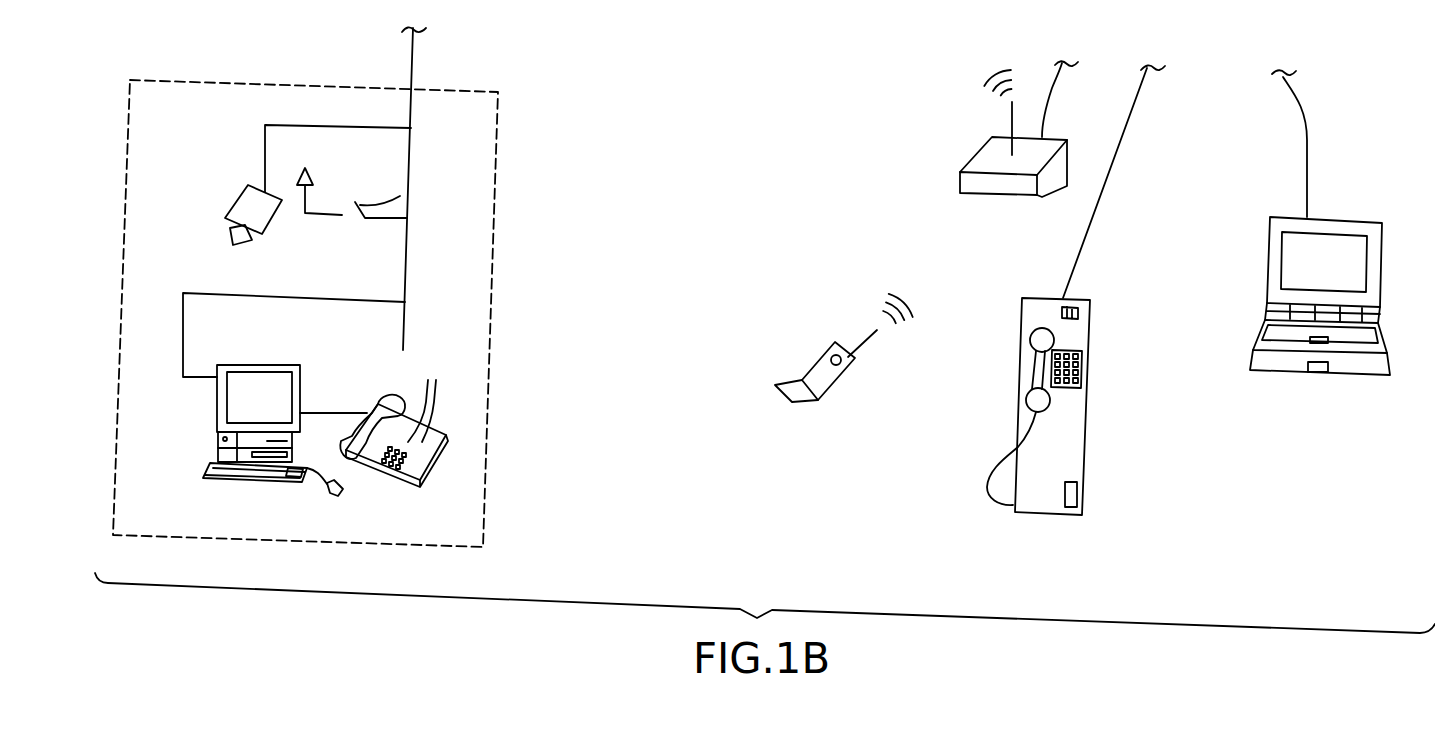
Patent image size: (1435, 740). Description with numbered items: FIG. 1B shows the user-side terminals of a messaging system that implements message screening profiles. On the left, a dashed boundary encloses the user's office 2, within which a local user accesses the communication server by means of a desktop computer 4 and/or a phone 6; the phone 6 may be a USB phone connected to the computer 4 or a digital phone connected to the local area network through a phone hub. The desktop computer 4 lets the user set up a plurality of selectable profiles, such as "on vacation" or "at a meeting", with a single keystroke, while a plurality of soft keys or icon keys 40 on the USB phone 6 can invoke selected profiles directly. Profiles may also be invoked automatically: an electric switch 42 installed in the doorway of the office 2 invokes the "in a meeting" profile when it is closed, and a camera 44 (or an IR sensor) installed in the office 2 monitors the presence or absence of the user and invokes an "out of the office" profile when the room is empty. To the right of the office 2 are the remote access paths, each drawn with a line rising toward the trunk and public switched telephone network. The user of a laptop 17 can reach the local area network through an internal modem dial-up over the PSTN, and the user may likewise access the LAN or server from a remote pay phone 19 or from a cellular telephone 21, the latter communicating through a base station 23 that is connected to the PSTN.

The office 2 is at (493, 415).
The desktop computer 4 is at (268, 365).
The phone 6 is at (413, 467).
The soft keys or icon keys 40 is at (428, 394).
The electric switch 42 is at (400, 196).
The camera 44 is at (232, 211).
The laptop 17 is at (1352, 217).
The remote pay phone 19 is at (1090, 313).
The cellular telephone 21 is at (835, 389).
The base station 23 is at (958, 183).